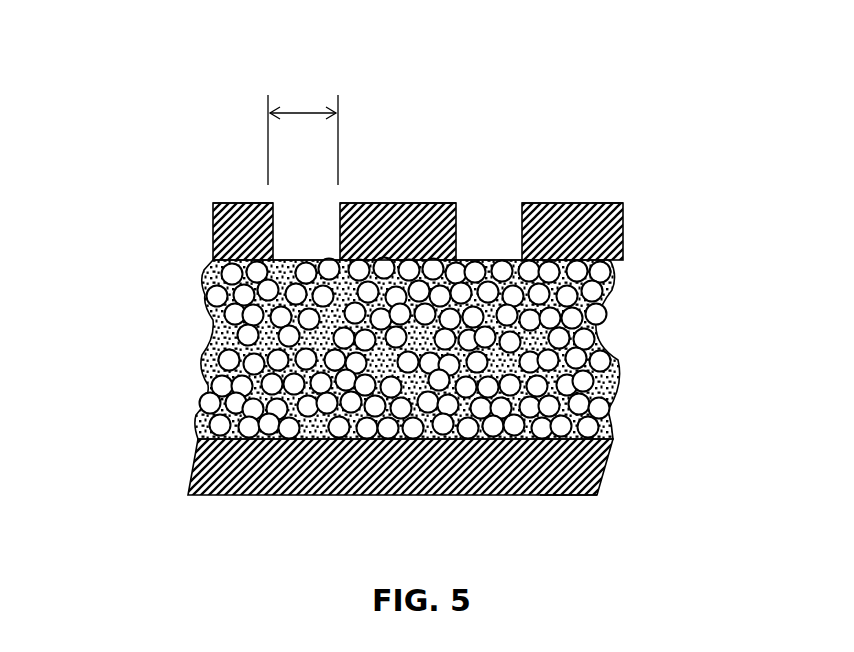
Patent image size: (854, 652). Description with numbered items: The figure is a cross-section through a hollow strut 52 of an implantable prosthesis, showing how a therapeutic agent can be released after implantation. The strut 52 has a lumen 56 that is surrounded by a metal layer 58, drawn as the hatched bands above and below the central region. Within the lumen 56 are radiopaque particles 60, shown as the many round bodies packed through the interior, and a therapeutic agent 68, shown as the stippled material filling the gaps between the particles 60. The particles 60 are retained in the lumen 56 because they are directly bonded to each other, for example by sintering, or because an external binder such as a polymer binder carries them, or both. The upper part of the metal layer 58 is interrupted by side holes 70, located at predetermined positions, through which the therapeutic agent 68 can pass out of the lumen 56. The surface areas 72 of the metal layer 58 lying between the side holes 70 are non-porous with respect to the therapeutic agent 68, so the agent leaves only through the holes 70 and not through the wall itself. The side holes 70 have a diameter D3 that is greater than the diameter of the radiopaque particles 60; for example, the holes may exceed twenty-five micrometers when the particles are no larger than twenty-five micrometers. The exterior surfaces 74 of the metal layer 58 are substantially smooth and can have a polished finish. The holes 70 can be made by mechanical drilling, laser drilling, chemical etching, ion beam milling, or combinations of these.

The hollow strut 52 is at (488, 78).
The lumen 56 is at (393, 414).
The metal layer 58 is at (157, 200).
The radiopaque particles 60 is at (597, 326).
The therapeutic agent 68 is at (612, 372).
The side holes 70 is at (305, 213).
The surface areas 72 is at (213, 155).
The exterior surfaces 74 is at (250, 201).
The diameter of side holes D3 is at (306, 112).